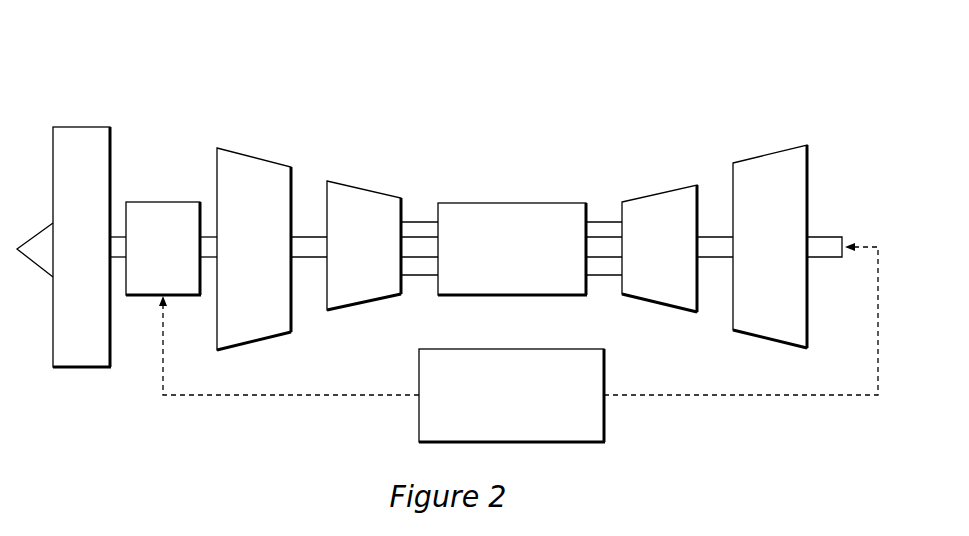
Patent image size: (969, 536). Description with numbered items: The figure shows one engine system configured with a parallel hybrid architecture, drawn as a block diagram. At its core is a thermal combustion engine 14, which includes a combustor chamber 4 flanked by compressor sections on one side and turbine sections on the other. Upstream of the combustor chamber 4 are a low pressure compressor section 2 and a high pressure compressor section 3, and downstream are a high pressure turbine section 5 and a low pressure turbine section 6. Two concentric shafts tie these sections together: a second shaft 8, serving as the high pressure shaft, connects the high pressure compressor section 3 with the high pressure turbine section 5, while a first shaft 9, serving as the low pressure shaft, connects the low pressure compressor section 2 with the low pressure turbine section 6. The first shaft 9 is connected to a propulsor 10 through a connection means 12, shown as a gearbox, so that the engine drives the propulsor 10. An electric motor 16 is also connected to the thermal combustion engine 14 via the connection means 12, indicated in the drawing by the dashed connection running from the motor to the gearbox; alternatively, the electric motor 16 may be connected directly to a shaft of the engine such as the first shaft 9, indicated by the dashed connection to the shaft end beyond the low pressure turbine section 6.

The low pressure compressor section 2 is at (281, 164).
The high pressure compressor section 3 is at (366, 188).
The combustor chamber 4 is at (523, 203).
The high pressure turbine section 5 is at (663, 191).
The low pressure turbine section 6 is at (756, 162).
The second shaft 8 is at (417, 221).
The first shaft 9 is at (831, 236).
The propulsor 10 is at (108, 128).
The connection means 12 is at (163, 201).
The thermal combustion engine 14 is at (490, 96).
The electric motor 16 is at (622, 421).